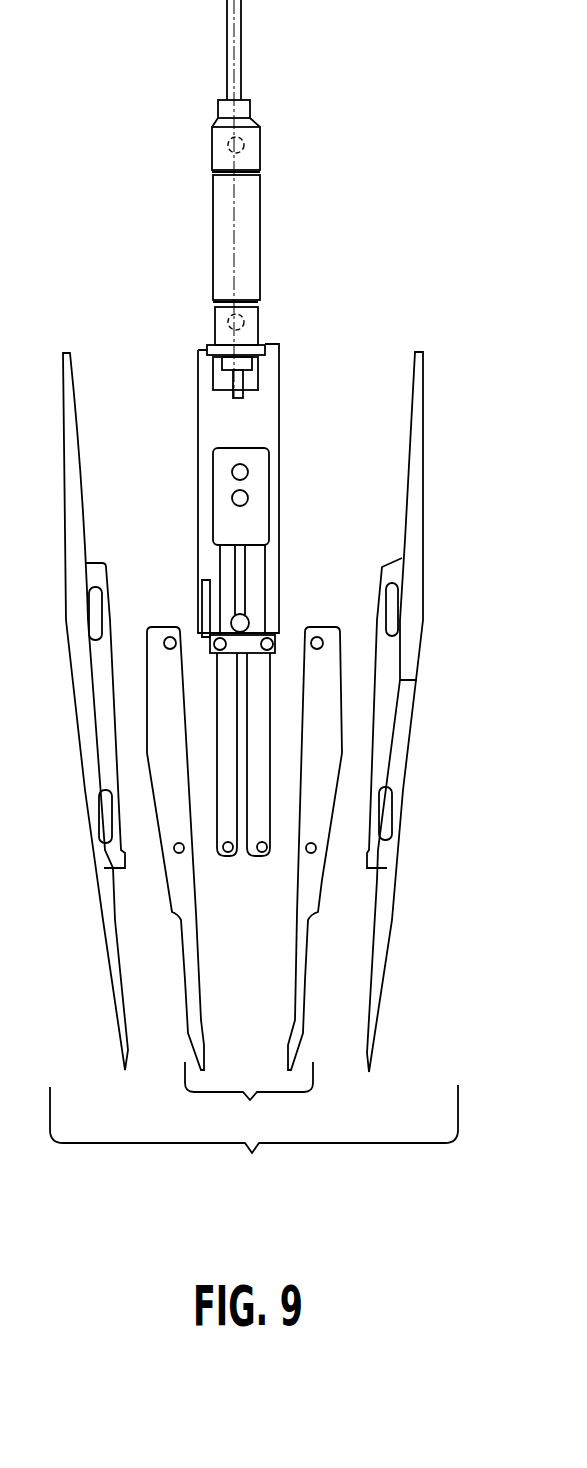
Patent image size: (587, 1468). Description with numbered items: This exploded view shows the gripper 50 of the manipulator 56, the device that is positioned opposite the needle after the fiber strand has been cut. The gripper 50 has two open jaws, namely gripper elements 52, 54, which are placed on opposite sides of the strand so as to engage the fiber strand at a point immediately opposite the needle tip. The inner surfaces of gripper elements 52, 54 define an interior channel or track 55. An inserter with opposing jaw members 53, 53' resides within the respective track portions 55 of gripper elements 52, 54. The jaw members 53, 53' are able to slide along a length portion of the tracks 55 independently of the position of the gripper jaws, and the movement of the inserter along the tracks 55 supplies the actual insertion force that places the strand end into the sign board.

The manipulator 56 is at (359, 326).
The gripper 50 is at (412, 463).
The gripper element 52 is at (378, 940).
The track 55 is at (412, 617).
The jaw member 53 is at (192, 848).
The jaw member 53' is at (316, 848).
The gripper element 54 is at (248, 1102).